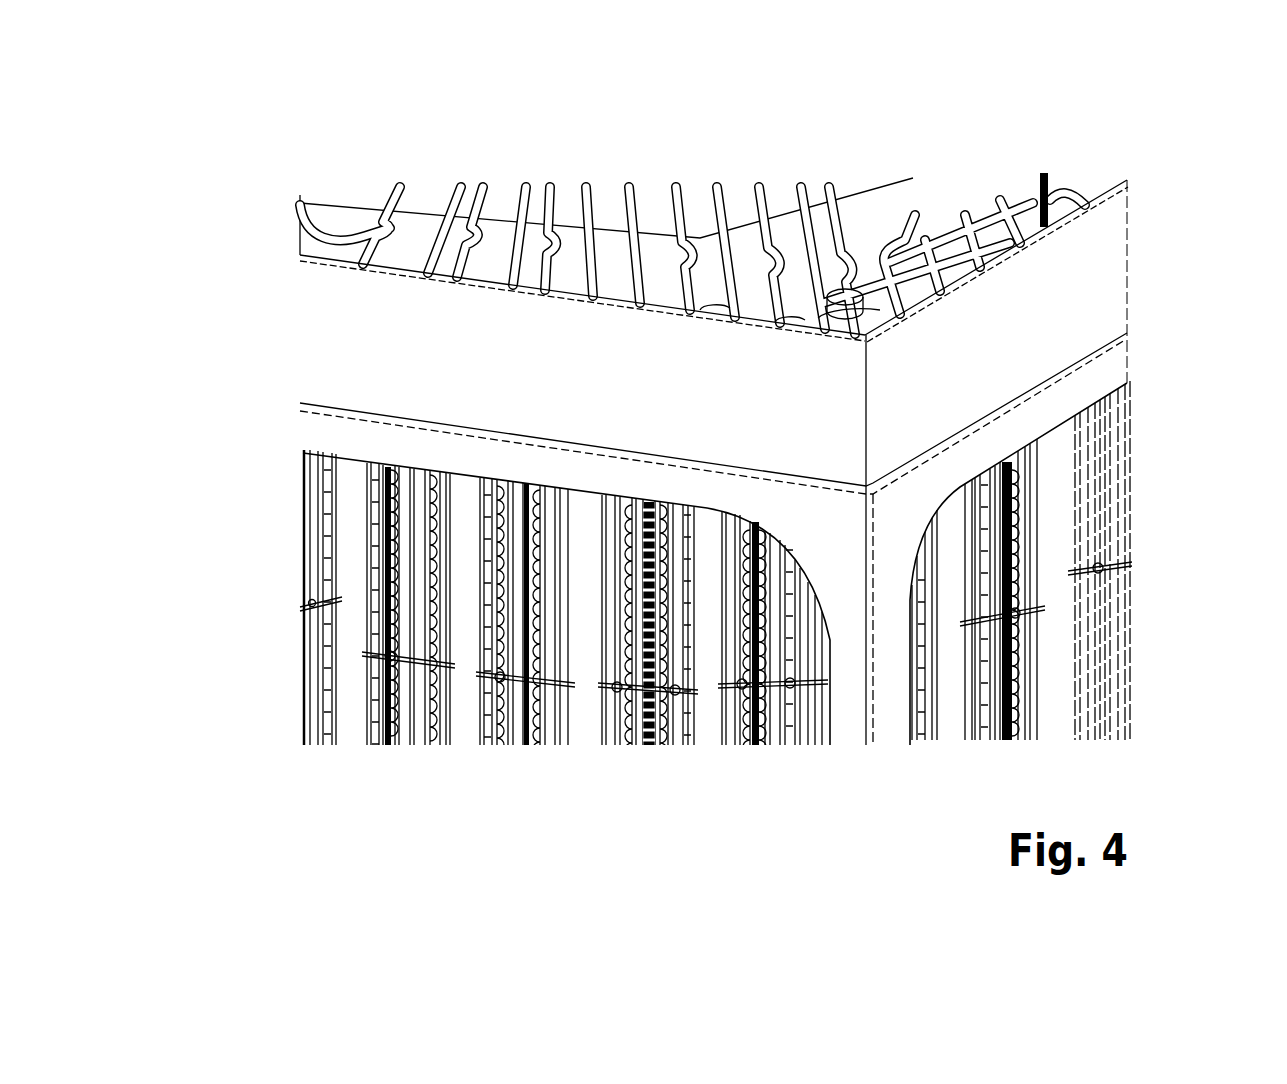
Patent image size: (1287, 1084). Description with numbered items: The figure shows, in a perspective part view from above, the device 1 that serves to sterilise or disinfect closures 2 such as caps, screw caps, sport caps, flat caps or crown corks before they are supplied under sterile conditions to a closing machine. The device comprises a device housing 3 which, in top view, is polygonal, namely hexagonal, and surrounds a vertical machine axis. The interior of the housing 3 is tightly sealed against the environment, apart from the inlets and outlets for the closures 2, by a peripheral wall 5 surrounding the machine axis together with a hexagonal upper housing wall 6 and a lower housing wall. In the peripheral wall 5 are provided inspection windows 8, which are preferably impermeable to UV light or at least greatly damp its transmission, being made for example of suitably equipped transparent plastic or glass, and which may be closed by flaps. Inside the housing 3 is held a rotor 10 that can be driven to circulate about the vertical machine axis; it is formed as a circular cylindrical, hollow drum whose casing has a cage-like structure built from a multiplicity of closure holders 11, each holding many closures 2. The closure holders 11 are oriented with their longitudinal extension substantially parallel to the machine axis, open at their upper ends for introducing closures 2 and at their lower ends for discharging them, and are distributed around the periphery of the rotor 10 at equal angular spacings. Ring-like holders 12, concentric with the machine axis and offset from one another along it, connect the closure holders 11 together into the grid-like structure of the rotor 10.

The device 1 is at (248, 188).
The closures 2 is at (415, 700).
The device housing 3 is at (1128, 291).
The peripheral wall 5 is at (322, 335).
The upper housing wall 6 is at (327, 413).
The inspection windows 8 is at (770, 540).
The rotor 10 is at (298, 588).
The closure holders 11 is at (305, 675).
The ring-like holders 12 is at (607, 728).